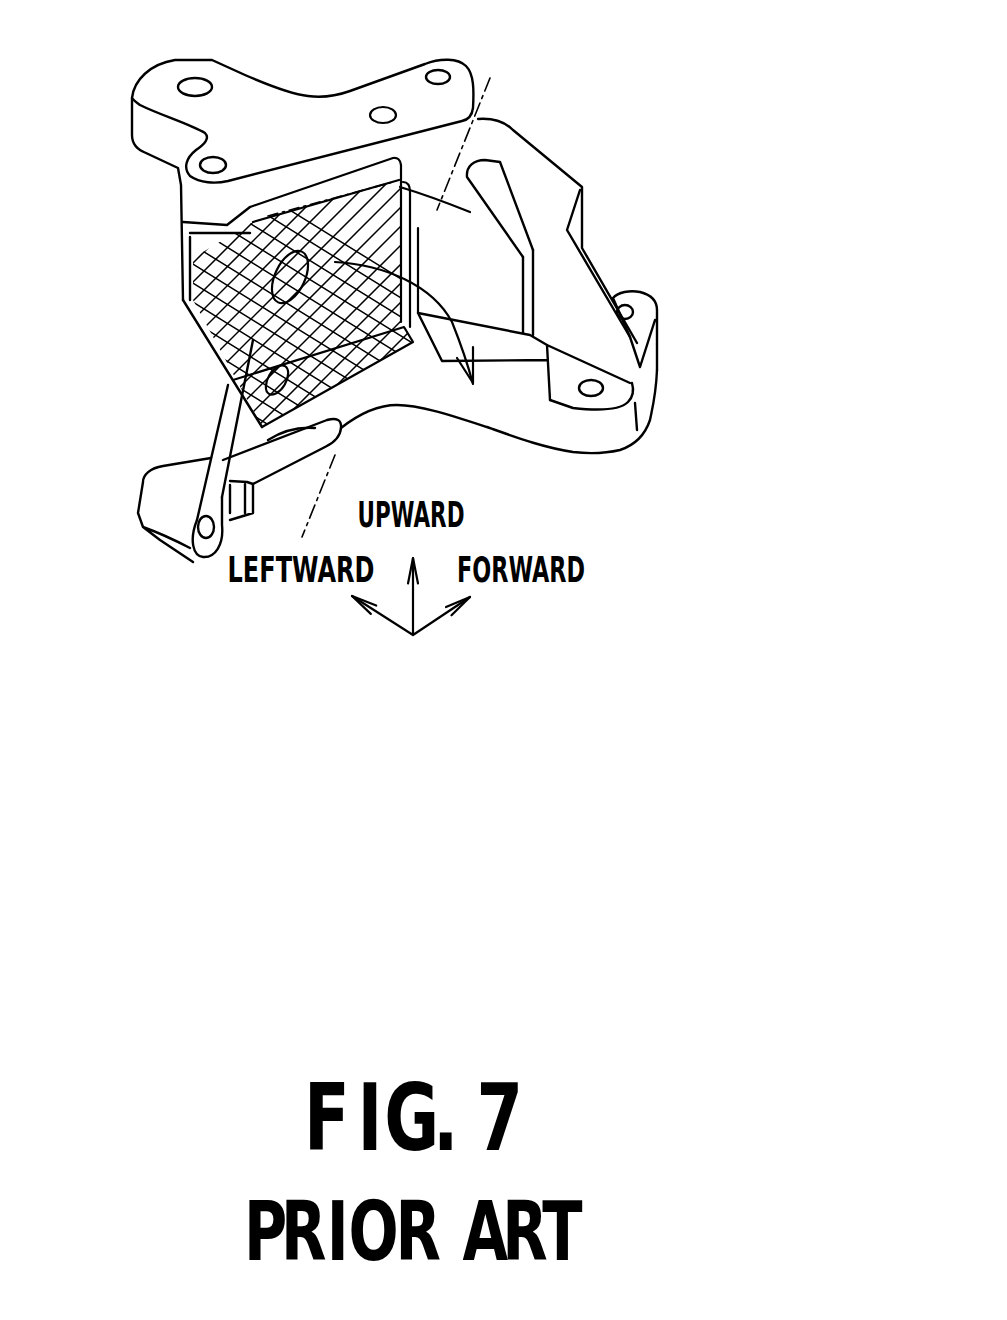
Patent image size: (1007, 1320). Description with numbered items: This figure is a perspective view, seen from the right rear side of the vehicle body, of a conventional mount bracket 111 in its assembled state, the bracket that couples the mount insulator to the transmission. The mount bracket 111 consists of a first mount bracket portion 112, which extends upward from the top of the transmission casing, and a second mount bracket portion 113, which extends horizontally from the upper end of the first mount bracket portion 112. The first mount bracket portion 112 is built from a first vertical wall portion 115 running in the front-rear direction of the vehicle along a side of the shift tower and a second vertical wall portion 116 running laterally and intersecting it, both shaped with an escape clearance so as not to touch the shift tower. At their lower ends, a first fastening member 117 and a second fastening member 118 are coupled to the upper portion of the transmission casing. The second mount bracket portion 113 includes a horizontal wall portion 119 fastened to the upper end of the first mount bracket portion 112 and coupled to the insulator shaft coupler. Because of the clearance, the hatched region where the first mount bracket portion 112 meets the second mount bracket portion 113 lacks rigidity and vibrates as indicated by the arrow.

The mount bracket 111 is at (664, 10).
The first mount bracket portion 112 is at (538, 143).
The second mount bracket portion 113 is at (467, 63).
The first vertical wall portion 115 is at (235, 436).
The second vertical wall portion 116 is at (505, 270).
The first fastening member 117 is at (200, 548).
The second fastening member 118 is at (618, 418).
The horizontal wall portion 119 is at (310, 120).